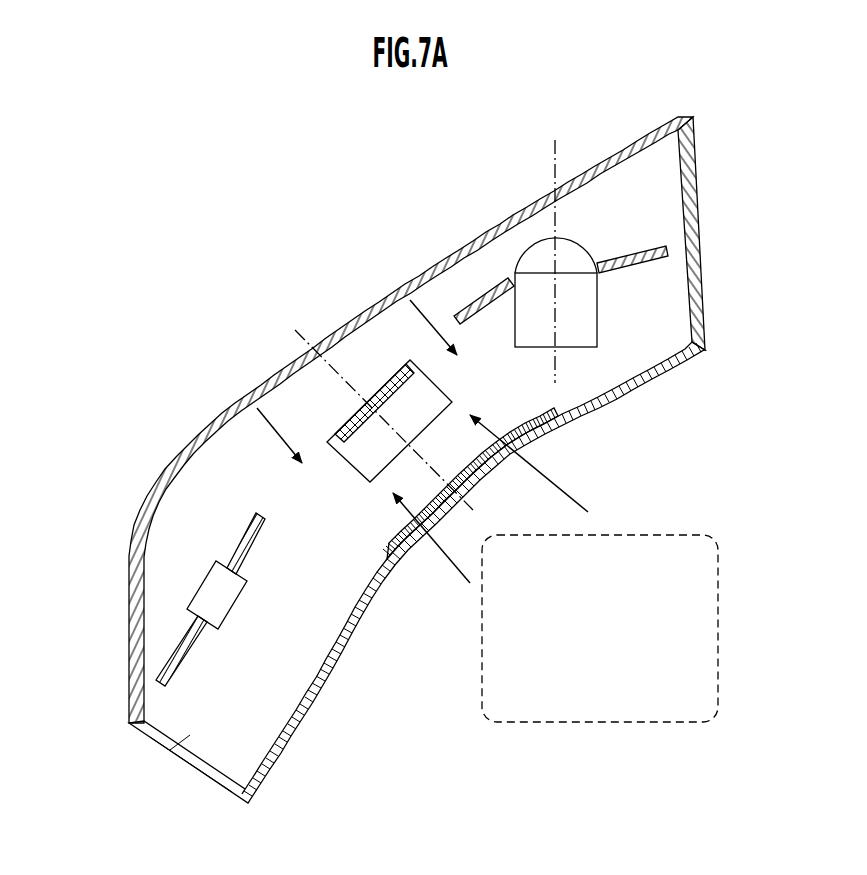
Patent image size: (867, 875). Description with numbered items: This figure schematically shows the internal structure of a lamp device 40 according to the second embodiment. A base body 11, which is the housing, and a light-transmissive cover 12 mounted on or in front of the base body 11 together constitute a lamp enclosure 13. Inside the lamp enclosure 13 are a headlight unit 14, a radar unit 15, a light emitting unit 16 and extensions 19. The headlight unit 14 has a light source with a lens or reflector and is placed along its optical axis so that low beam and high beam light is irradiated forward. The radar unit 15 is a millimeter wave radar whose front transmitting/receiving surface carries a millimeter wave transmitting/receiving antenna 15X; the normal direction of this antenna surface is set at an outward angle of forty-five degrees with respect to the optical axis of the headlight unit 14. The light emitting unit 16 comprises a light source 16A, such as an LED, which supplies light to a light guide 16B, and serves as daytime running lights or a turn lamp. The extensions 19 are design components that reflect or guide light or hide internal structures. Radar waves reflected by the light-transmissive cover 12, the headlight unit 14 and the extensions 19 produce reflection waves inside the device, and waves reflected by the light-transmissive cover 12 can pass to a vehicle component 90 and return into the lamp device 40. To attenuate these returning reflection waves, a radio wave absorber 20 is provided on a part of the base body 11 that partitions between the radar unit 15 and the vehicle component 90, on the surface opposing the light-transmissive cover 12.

The lamp device 40 is at (262, 200).
The lamp enclosure 13 is at (70, 697).
The light-transmissive cover 12 is at (413, 272).
The base body 11 is at (138, 728).
The headlight unit 14 is at (593, 333).
The radar unit 15 is at (380, 367).
The millimeter wave transmitting/receiving antenna 15X is at (415, 373).
The light emitting unit 16 is at (145, 427).
The light source 16A is at (210, 582).
The light guide 16B is at (243, 532).
The extensions 19 is at (490, 292).
The radio wave absorber 20 is at (403, 561).
The vehicle component 90 is at (720, 592).